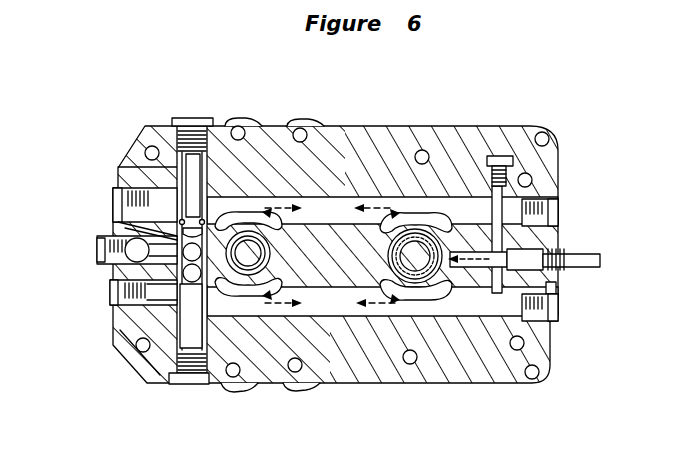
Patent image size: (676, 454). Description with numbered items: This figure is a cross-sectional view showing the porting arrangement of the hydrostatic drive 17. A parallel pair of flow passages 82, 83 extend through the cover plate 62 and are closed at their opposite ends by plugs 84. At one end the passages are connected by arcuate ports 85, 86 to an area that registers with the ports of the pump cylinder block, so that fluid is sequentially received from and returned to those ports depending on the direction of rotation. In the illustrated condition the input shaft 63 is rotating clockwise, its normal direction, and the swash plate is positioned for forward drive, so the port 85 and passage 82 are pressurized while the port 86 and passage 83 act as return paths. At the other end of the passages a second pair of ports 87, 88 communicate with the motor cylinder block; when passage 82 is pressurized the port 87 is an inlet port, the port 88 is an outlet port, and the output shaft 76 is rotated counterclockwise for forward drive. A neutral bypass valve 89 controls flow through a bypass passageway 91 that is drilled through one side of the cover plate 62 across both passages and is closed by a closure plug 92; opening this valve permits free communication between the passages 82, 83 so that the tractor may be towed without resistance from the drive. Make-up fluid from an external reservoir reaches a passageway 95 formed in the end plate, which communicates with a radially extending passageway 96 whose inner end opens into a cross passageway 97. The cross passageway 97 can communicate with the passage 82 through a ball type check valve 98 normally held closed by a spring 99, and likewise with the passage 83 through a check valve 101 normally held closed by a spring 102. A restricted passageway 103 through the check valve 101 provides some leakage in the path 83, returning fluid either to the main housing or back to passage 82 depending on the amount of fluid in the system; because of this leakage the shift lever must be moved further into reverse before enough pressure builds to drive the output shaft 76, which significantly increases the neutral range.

The hydrostatic drive 17 is at (86, 101).
The cover plate 62 is at (387, 388).
The input shaft 63 is at (233, 270).
The output shaft 76 is at (485, 328).
The flow passage 82 is at (338, 310).
The flow passage 83 is at (345, 203).
The plug 84 is at (113, 212).
The arcuate port 85 is at (253, 285).
The arcuate port 86 is at (258, 210).
The port 87 is at (427, 300).
The port 88 is at (452, 197).
The neutral bypass valve 89 is at (535, 252).
The bypass passageway 91 is at (550, 283).
The closure plug 92 is at (500, 160).
The passageway 95 is at (97, 240).
The radially extending passageway 96 is at (115, 285).
The cross passageway 97 is at (113, 224).
The ball type check valve 98 is at (165, 343).
The spring 99 is at (165, 347).
The check valve 101 is at (160, 248).
The spring 102 is at (210, 118).
The restricted passageway 103 is at (138, 147).